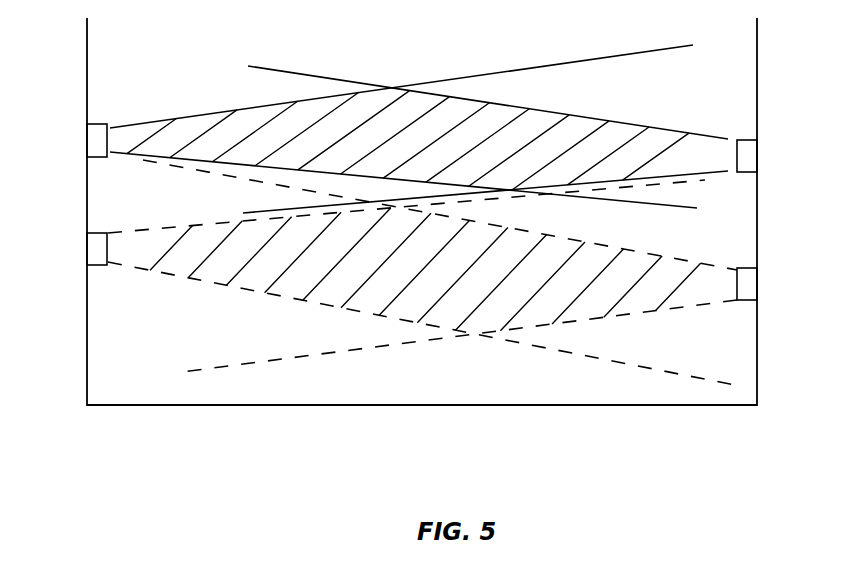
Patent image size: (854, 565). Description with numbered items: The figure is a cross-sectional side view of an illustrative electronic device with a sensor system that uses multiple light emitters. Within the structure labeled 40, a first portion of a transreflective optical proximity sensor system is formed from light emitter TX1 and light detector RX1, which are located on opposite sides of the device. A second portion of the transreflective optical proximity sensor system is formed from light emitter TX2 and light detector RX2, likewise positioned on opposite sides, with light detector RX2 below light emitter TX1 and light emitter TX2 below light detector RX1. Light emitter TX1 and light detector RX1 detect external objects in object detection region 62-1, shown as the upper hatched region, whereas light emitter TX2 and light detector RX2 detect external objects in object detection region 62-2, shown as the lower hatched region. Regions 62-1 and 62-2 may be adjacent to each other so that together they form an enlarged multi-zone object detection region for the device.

The electronic device housing 40 is at (759, 85).
The light emitter TX1 is at (95, 140).
The light detector RX1 is at (752, 156).
The light emitter TX2 is at (752, 287).
The light detector RX2 is at (95, 250).
The object detection region 62-1 is at (388, 105).
The object detection region 62-2 is at (449, 313).